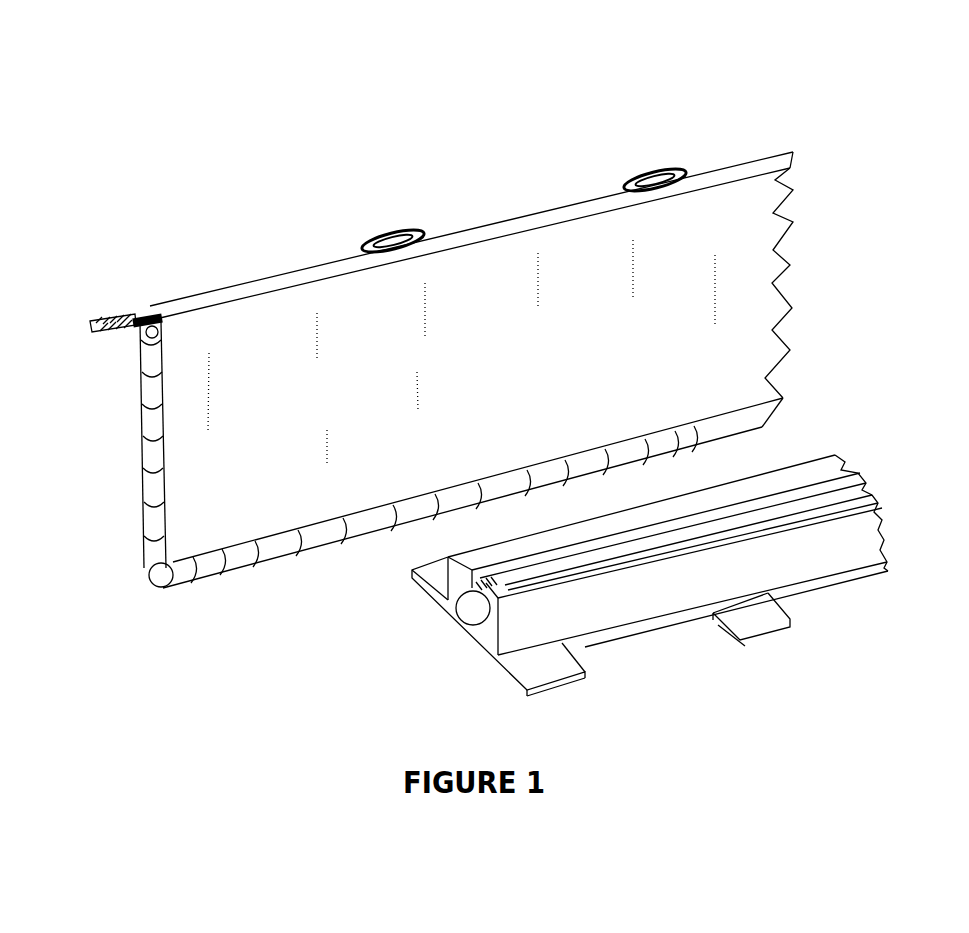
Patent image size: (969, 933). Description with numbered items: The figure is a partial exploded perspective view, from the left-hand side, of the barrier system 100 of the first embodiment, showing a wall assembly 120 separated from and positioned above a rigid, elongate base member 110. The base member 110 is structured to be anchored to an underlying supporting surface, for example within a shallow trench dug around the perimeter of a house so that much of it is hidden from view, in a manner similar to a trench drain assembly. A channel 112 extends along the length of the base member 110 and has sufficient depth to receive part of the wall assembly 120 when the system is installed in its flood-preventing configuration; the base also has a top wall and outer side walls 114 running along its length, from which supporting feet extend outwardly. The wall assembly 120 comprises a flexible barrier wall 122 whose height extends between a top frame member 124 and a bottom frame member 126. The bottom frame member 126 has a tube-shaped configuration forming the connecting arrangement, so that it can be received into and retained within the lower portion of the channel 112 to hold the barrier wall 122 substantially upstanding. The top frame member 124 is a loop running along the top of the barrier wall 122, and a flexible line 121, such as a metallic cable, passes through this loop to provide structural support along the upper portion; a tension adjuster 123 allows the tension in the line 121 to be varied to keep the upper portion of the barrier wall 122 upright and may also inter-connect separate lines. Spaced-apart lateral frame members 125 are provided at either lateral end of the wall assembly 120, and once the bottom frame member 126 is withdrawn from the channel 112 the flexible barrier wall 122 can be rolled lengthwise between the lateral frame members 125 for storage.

The barrier system 100 is at (203, 232).
The base member 110 is at (620, 620).
The channel 112 is at (470, 608).
The outer side walls 114 is at (808, 562).
The wall assembly 120 is at (262, 273).
The flexible line 121 is at (135, 322).
The flexible barrier wall 122 is at (543, 292).
The tension adjuster 123 is at (98, 315).
The top frame member 124 is at (722, 170).
The lateral frame members 125 is at (158, 430).
The bottom frame member 126 is at (706, 424).